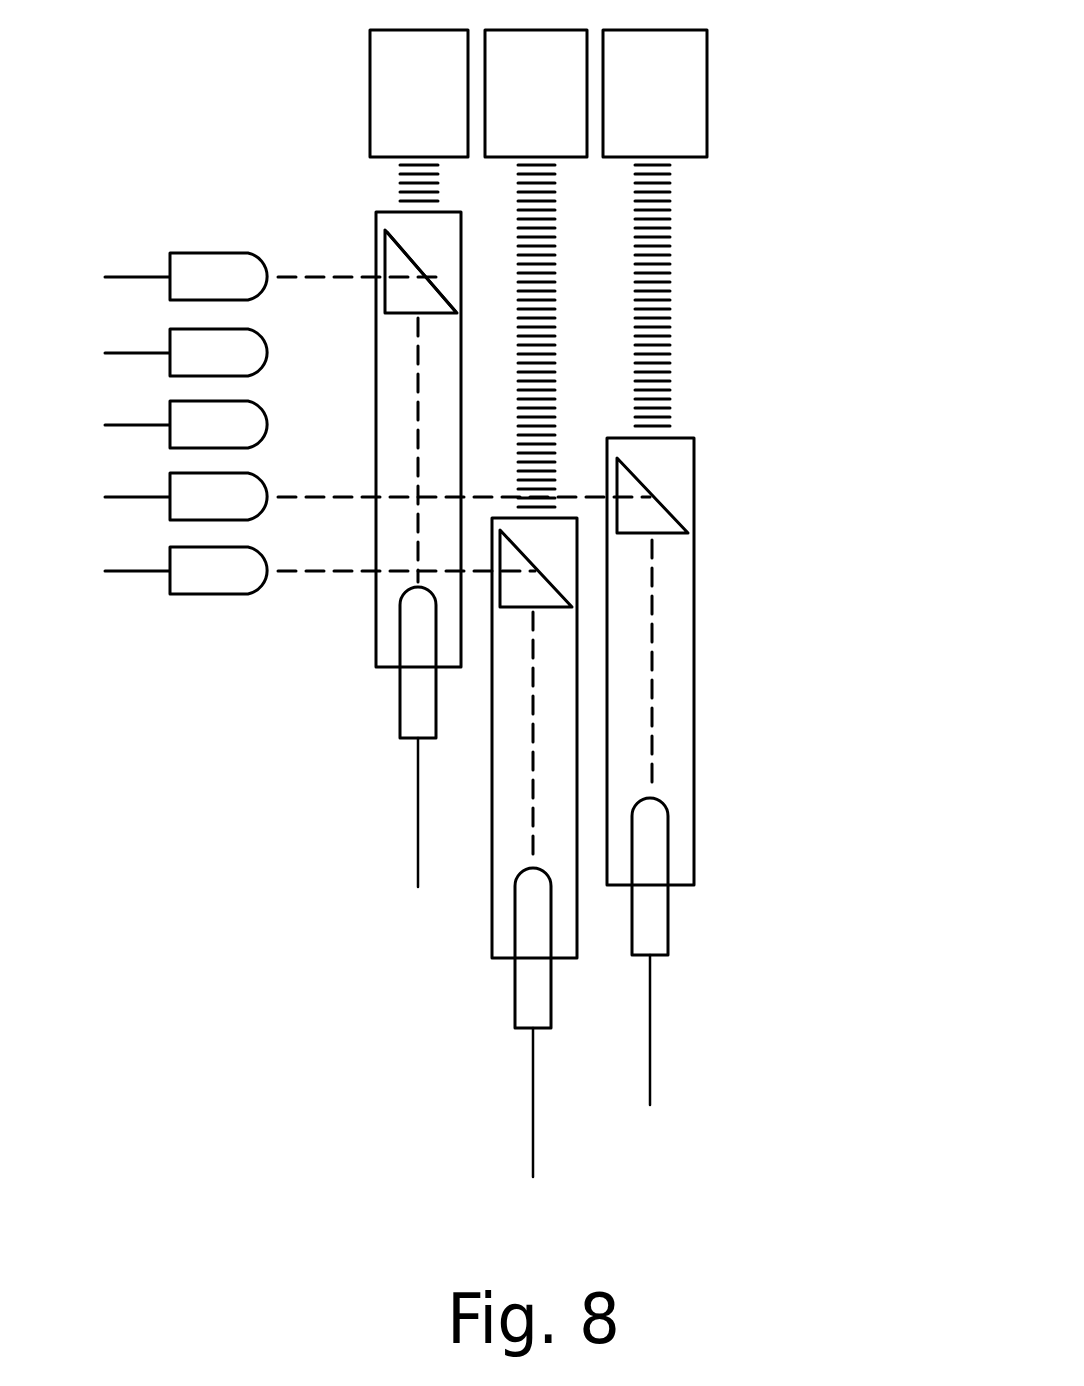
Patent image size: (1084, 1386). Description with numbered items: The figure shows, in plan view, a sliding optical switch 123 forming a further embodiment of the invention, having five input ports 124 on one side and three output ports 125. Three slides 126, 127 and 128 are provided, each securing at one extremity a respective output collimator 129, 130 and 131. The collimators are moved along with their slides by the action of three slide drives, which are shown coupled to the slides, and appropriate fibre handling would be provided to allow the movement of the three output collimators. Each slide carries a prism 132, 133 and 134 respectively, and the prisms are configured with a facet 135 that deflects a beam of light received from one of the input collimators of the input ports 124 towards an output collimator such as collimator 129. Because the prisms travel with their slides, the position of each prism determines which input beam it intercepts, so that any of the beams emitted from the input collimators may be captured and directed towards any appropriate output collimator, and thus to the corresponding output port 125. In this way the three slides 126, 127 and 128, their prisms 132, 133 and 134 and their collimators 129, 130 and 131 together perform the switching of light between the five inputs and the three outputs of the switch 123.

The switch 123 is at (763, 165).
The input ports 124 is at (163, 210).
The output ports 125 is at (698, 948).
The slide 126 is at (384, 624).
The slide 127 is at (503, 887).
The slide 128 is at (675, 737).
The collimator 129 is at (410, 705).
The collimator 130 is at (532, 997).
The collimator 131 is at (657, 913).
The prism 132 is at (438, 288).
The prism 133 is at (535, 560).
The prism 134 is at (663, 523).
The facet 135 is at (400, 250).